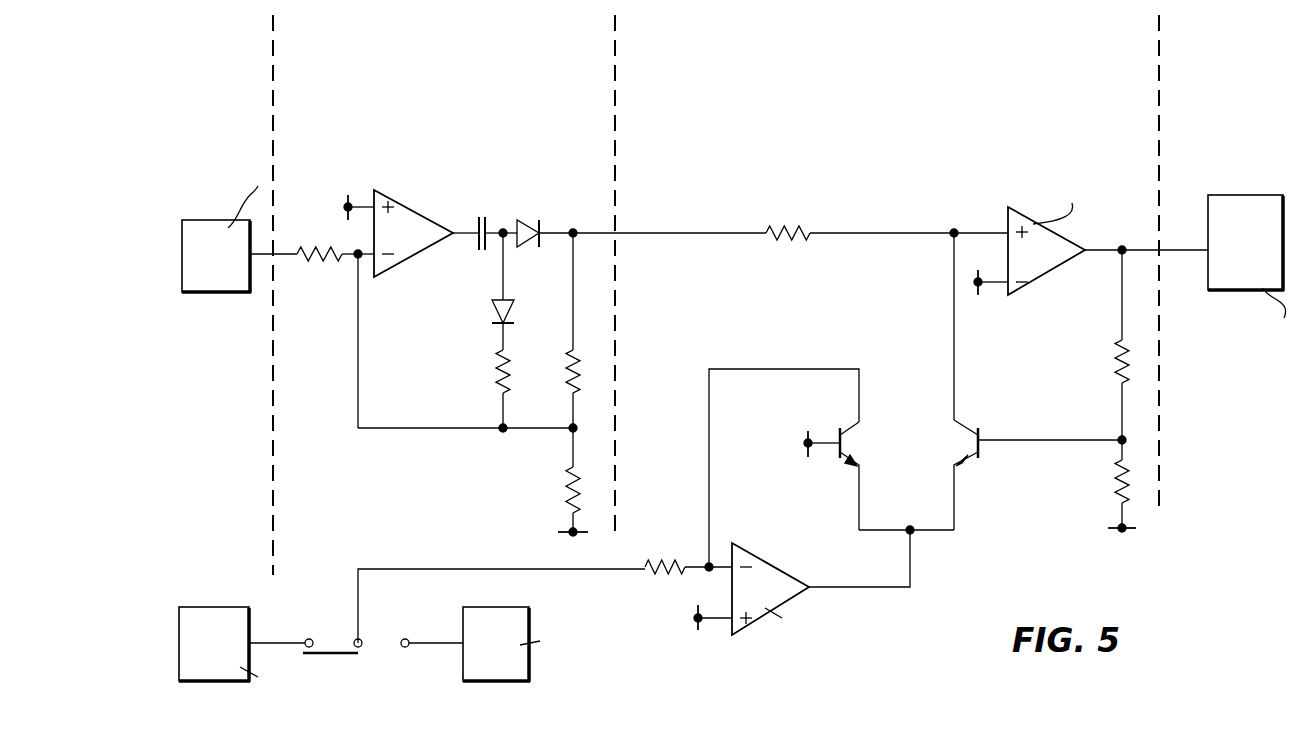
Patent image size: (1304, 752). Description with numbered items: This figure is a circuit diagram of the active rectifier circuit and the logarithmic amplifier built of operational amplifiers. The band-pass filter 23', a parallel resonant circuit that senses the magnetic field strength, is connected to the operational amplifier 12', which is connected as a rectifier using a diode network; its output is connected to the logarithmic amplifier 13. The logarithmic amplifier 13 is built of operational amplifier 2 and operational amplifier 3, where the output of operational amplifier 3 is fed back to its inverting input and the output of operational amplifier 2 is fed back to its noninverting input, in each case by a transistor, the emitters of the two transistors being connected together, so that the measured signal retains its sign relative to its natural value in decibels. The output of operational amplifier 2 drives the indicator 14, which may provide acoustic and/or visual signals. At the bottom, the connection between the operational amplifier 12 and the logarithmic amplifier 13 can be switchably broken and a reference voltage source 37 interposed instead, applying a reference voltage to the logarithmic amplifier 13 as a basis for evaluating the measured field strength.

The band-pass filter 23' is at (205, 223).
The operational amplifier 12' is at (508, 319).
The logarithmic amplifier 13 is at (897, 146).
The operational amplifier 2 is at (1003, 229).
The operational amplifier 3 is at (815, 599).
The indicator 14 is at (1227, 267).
The operational amplifier 12 is at (301, 668).
The reference voltage source 37 is at (537, 653).